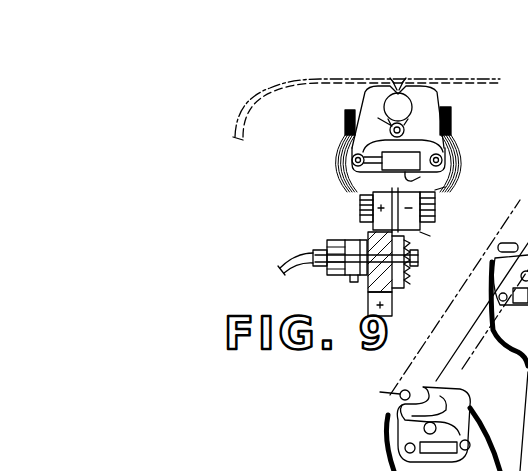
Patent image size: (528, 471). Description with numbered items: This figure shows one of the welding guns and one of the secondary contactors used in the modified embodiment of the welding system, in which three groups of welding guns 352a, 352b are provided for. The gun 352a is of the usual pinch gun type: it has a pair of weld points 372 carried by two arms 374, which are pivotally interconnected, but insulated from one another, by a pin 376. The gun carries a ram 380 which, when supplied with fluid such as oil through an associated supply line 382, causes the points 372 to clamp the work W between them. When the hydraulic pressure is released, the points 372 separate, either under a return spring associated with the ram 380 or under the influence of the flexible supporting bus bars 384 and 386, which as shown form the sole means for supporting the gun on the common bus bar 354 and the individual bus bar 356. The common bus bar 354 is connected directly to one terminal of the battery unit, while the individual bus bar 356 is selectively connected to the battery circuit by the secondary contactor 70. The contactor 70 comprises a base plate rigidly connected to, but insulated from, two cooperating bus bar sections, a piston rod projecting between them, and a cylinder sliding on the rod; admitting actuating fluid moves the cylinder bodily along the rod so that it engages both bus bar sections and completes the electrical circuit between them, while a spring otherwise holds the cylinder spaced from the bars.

The work W is at (325, 78).
The welding gun 352a is at (427, 102).
The welding gun 352b is at (498, 248).
The weld points 372 is at (403, 84).
The pin 376 is at (378, 118).
The arms 374 is at (350, 133).
The ram 380 is at (425, 155).
The flexible supporting bus bar 386 is at (346, 165).
The flexible supporting bus bar 384 is at (462, 170).
The individual bus bar 356 is at (361, 198).
The supply line 382 is at (443, 192).
The secondary contactor 70 is at (343, 240).
The common bus bar 354 is at (414, 232).